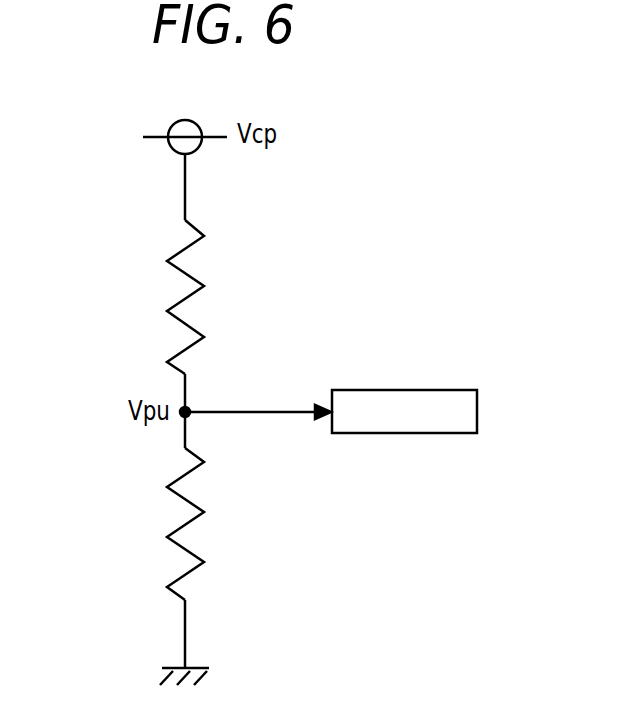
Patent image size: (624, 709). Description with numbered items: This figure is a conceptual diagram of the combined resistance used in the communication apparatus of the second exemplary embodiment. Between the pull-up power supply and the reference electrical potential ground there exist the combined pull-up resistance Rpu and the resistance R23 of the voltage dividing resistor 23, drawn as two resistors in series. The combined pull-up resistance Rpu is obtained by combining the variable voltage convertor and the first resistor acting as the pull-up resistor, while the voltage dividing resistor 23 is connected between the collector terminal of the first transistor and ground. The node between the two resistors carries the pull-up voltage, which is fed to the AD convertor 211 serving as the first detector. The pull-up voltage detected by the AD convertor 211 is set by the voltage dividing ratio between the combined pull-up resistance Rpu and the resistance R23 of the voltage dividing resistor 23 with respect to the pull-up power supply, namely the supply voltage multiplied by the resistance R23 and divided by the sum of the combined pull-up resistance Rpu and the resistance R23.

The AD convertor 211 is at (402, 390).
The voltage dividing resistor 23 is at (196, 534).
The combined pull-up resistance Rpu is at (206, 308).
The resistance of voltage dividing resistor R23 is at (208, 537).